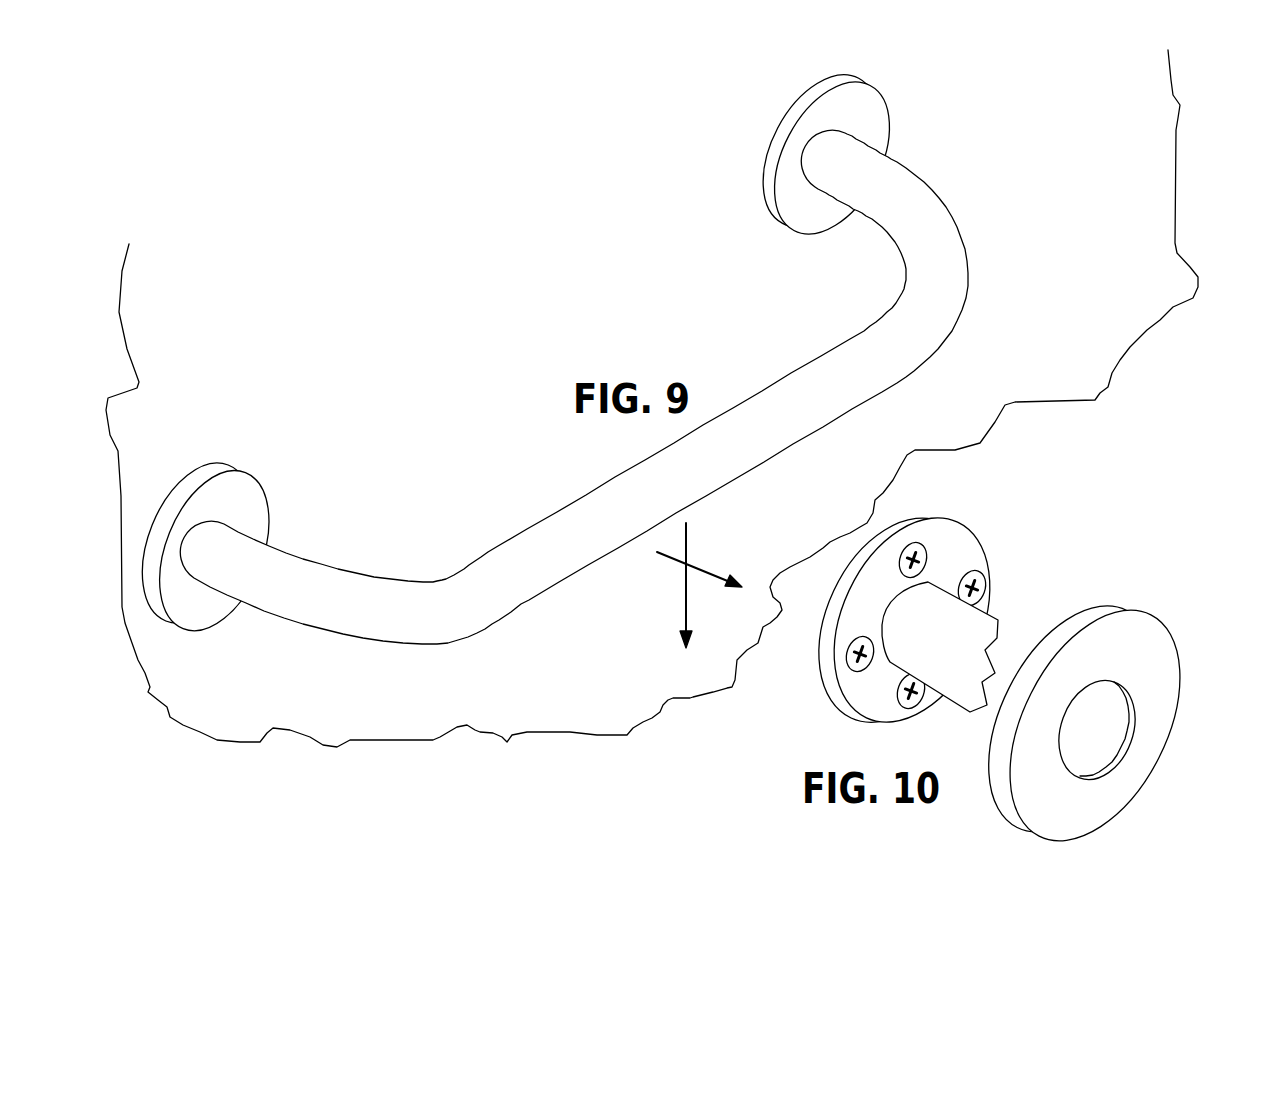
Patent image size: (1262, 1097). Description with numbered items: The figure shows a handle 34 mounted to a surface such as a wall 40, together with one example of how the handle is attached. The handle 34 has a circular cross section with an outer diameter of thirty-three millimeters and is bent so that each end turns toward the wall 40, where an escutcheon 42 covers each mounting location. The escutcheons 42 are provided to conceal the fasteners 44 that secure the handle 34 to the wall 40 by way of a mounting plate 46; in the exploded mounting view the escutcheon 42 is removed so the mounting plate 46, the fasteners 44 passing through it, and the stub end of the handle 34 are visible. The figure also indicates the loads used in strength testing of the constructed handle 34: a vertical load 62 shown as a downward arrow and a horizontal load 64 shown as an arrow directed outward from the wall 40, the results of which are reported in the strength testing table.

In FIG. 9, the handle 34 is at (950, 283).
In FIG. 10, the handle 34 is at (973, 628).
In FIG. 9, the wall 40 is at (1120, 195).
In FIG. 9, the escutcheon 42 is at (873, 107).
In FIG. 10, the escutcheon 42 is at (1155, 650).
In FIG. 10, the fasteners 44 is at (983, 613).
In FIG. 10, the mounting plate 46 is at (848, 691).
In FIG. 9, the vertical load 62 is at (681, 598).
In FIG. 9, the horizontal load 64 is at (710, 572).